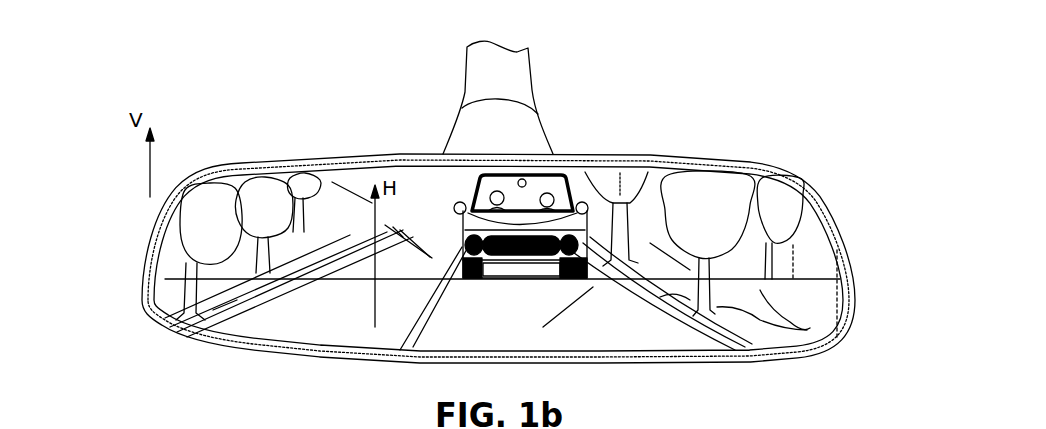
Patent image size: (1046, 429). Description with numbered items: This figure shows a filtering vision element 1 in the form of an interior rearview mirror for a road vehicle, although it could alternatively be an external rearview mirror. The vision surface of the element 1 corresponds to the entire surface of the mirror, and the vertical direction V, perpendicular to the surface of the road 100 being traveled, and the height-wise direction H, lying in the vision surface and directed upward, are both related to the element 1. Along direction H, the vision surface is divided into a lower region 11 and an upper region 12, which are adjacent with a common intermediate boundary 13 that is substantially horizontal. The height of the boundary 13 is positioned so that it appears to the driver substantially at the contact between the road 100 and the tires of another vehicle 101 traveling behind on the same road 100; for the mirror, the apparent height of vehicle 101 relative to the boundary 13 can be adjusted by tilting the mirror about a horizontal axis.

The vision element 1 is at (302, 157).
The road surface 100 is at (332, 327).
The other vehicle 101 is at (468, 196).
The lower region 11 is at (623, 335).
The upper region 12 is at (753, 203).
The intermediate boundary 13 is at (797, 280).